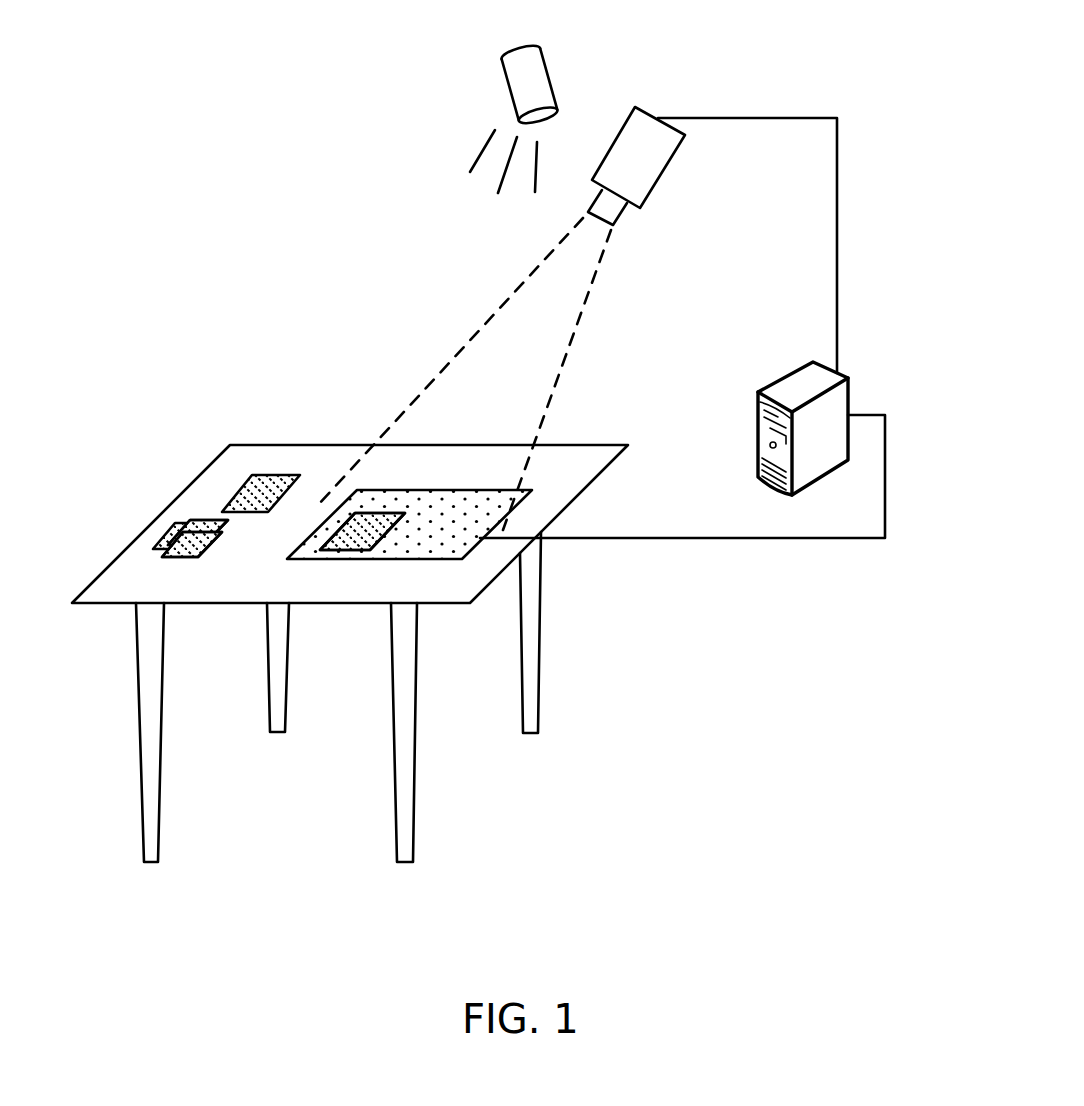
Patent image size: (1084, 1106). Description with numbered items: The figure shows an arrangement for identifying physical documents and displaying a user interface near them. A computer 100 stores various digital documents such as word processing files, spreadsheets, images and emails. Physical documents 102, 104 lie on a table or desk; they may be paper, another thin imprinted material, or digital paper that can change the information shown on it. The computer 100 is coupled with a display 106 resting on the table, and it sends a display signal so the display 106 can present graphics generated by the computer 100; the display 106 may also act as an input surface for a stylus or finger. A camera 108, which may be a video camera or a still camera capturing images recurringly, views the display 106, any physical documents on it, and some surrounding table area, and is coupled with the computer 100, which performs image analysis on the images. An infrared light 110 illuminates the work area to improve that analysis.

The computer 100 is at (848, 378).
The physical document 102 is at (168, 540).
The physical document 104 is at (363, 530).
The display 106 is at (463, 560).
The camera 108 is at (637, 103).
The infrared light 110 is at (503, 80).